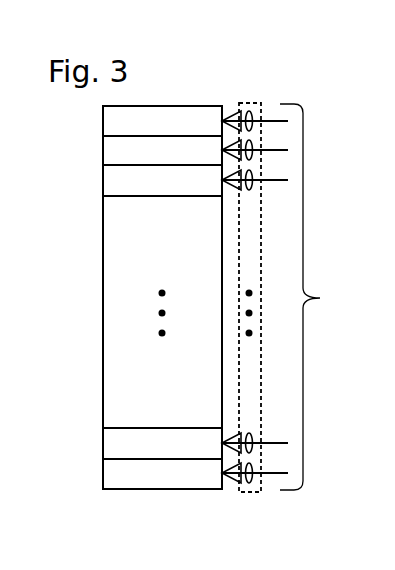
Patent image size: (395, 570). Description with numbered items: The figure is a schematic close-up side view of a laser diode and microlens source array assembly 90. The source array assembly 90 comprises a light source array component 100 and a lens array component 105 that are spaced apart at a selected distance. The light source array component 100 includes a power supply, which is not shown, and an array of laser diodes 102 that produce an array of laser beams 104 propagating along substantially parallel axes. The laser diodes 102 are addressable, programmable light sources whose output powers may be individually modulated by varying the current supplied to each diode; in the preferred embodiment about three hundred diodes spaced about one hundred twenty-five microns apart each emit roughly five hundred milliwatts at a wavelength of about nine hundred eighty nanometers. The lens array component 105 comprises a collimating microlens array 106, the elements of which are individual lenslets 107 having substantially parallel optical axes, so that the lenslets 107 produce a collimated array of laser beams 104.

The laser diode and microlens source array assembly 90 is at (74, 165).
The light source array component 100 is at (103, 313).
The laser diodes 102 is at (165, 180).
The laser beams 104 is at (271, 295).
The lens array component 105 is at (250, 493).
The collimating microlens array 106 is at (262, 101).
The lenslets 107 is at (253, 184).